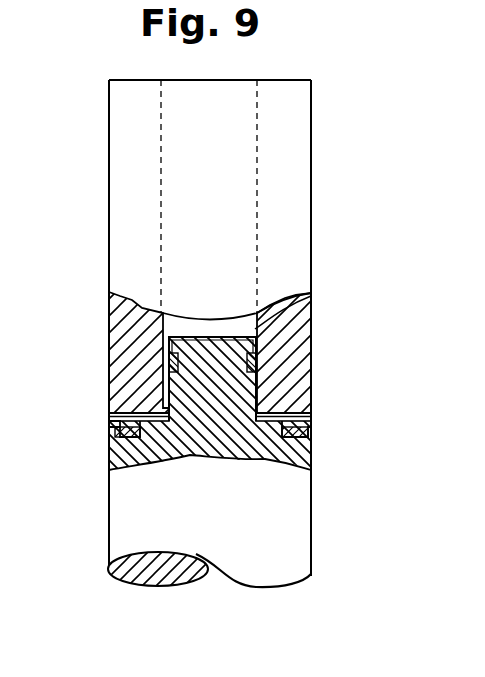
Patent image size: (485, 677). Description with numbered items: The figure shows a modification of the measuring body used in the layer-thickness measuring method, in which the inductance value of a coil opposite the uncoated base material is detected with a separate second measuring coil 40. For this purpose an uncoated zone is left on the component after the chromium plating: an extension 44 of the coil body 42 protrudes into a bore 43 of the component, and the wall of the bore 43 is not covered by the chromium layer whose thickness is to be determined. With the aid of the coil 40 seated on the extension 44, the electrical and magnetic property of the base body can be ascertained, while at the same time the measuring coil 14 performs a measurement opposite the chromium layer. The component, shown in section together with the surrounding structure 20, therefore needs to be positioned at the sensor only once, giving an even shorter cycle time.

The measuring coil 14 is at (120, 432).
The housing 20 is at (122, 408).
The second measuring coil 40 is at (253, 361).
The coil body 42 is at (285, 542).
The bore 43 is at (311, 293).
The extension 44 is at (238, 396).